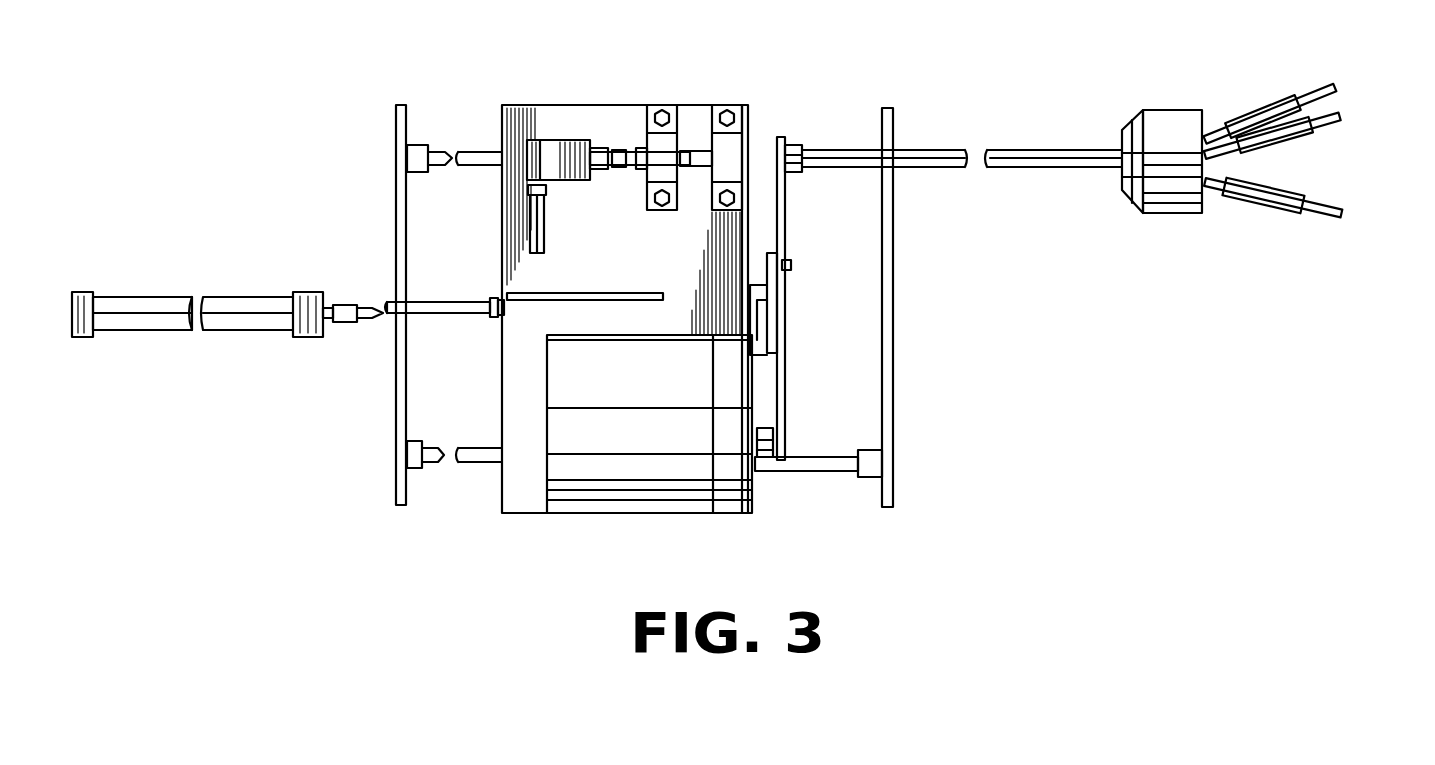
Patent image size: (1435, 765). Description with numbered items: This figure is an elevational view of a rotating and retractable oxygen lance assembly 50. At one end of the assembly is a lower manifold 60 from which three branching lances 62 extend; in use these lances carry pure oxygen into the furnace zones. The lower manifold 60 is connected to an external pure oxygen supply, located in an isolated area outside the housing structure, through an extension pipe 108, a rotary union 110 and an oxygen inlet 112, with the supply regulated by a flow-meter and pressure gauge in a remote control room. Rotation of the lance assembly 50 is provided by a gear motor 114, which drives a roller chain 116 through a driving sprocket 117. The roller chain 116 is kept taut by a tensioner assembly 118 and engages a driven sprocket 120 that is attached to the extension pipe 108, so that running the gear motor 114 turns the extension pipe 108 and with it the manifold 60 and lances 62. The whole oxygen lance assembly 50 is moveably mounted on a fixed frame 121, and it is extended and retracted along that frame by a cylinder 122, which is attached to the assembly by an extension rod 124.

The oxygen lance assembly 50 is at (868, 70).
The lower manifold 60 is at (1180, 115).
The branching lances 62 is at (1343, 90).
The extension pipe 108 is at (935, 157).
The rotary union 110 is at (548, 150).
The oxygen inlet 112 is at (538, 212).
The gear motor 114 is at (735, 490).
The roller chain 116 is at (786, 358).
The driving sprocket 117 is at (773, 418).
The tensioner assembly 118 is at (800, 262).
The driven sprocket 120 is at (797, 146).
The fixed frame 121 is at (396, 142).
The cylinder 122 is at (145, 303).
The extension rod 124 is at (470, 300).